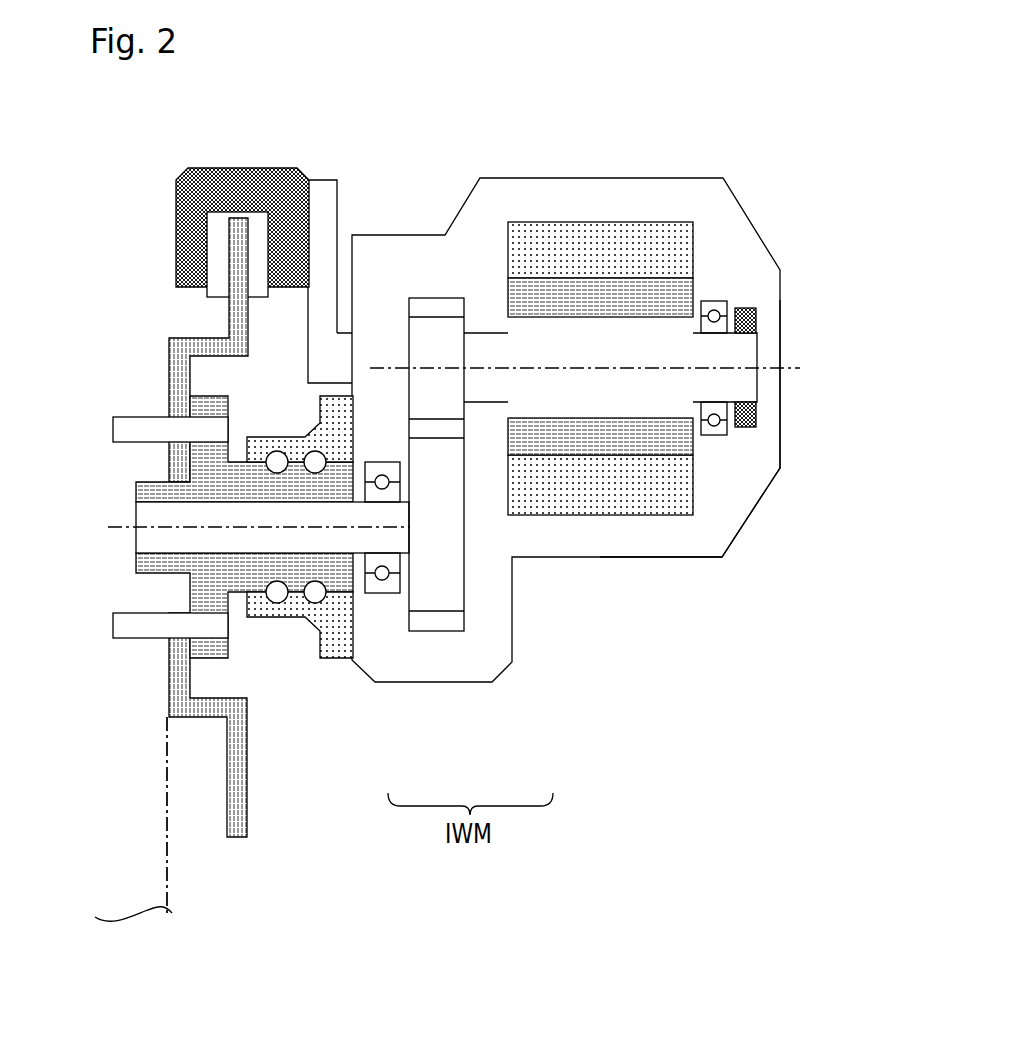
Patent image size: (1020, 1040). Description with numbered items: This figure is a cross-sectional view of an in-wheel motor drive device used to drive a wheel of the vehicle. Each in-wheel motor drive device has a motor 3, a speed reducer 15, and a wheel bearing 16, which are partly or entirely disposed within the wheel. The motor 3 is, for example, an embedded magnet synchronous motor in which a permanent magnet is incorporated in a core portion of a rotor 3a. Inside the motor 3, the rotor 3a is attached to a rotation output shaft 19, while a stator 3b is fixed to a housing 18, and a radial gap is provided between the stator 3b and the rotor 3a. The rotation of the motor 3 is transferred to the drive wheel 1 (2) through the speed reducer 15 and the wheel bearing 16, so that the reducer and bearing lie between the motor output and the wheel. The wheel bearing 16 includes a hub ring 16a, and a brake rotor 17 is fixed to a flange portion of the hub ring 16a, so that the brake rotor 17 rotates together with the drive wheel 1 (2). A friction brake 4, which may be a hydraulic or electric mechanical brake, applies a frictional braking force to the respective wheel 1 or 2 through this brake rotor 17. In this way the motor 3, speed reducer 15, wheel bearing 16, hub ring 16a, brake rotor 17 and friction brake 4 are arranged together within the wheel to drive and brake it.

The front wheel 1 is at (150, 845).
The wheel 2 is at (133, 819).
The motor 3 is at (606, 515).
The rotor 3a is at (677, 298).
The stator 3b is at (640, 253).
The friction brake 4 is at (213, 168).
The speed reducer 15 is at (444, 632).
The wheel bearing 16 is at (283, 616).
The hub ring 16a is at (158, 483).
The brake rotor 17 is at (182, 358).
The housing 18 is at (732, 493).
The rotation output shaft 19 is at (614, 361).